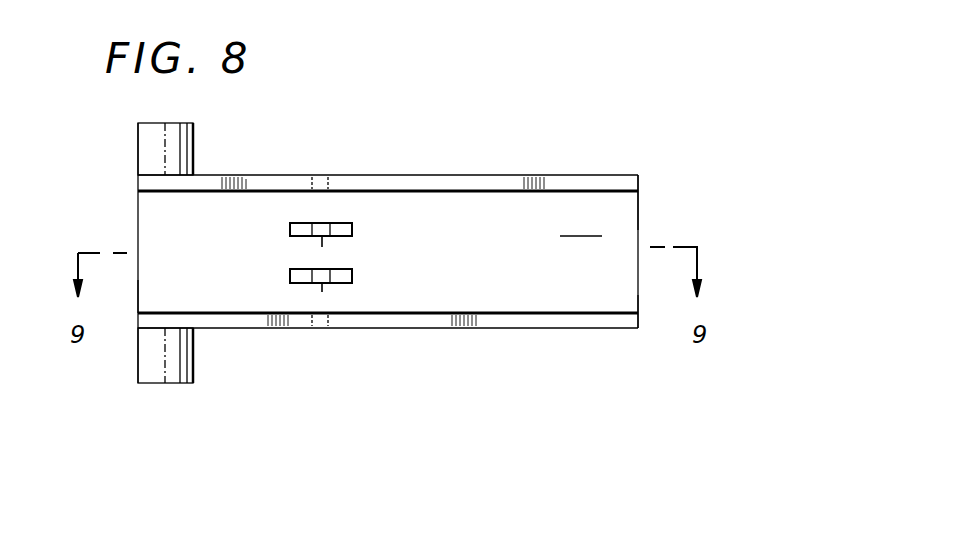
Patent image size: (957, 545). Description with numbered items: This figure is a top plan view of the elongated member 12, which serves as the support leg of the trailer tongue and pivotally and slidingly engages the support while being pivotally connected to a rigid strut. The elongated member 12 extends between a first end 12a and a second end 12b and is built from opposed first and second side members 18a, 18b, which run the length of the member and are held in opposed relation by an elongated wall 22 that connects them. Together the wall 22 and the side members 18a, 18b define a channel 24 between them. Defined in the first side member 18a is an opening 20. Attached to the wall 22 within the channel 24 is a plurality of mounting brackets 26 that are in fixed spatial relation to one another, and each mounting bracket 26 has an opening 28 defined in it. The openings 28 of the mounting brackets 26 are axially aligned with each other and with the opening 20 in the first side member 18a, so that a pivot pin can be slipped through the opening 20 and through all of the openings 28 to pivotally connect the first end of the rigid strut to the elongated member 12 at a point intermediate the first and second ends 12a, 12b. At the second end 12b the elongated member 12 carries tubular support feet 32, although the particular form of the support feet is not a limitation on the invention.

The elongated member 12 is at (740, 187).
The first end of the elongated member 12a is at (625, 297).
The second end of the elongated member 12b is at (150, 296).
The first side member 18a is at (530, 328).
The second side member 18b is at (468, 180).
The opening 20 is at (318, 183).
The elongated wall 22 is at (620, 222).
The channel 24 is at (581, 226).
The mounting brackets 26 is at (352, 230).
The opening of the mounting bracket 28 is at (322, 236).
The tubular support feet 32 is at (148, 150).